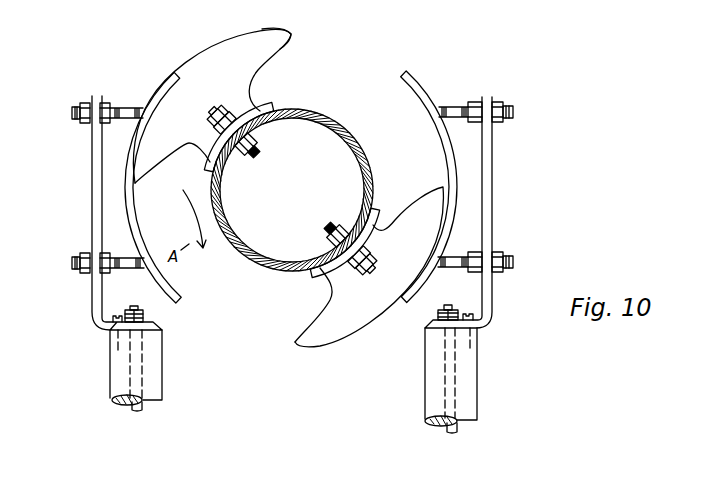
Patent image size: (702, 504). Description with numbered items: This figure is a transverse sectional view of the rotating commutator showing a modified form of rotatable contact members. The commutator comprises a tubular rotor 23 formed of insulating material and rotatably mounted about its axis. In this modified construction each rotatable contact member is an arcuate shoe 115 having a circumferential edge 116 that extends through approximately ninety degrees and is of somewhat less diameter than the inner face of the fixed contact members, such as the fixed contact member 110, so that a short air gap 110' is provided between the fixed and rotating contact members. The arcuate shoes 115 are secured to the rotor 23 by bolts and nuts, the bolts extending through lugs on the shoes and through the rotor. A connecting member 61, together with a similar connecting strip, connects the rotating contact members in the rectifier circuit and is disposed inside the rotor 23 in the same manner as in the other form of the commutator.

The tubular rotor 23 is at (338, 121).
The connecting member 61 is at (343, 222).
The band 110 is at (153, 176).
The air gap 110' is at (317, 163).
The arcuate shoe 115 is at (252, 58).
The circumferential edge 116 is at (242, 33).